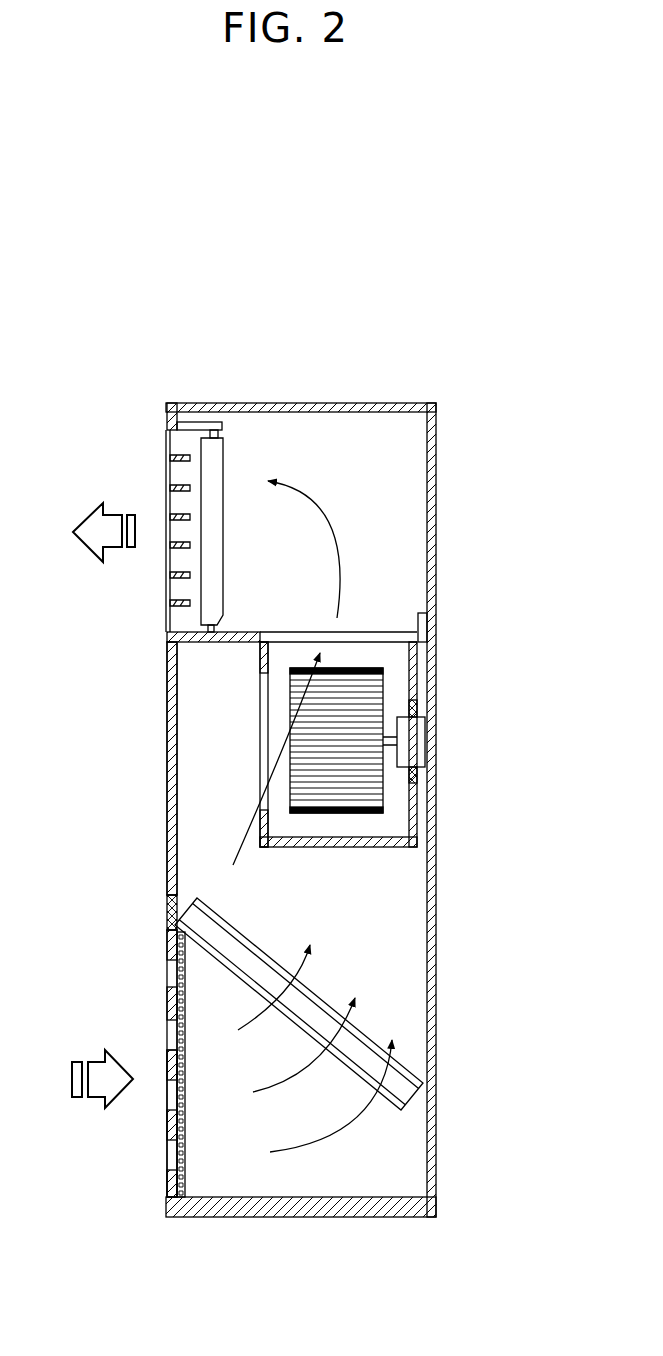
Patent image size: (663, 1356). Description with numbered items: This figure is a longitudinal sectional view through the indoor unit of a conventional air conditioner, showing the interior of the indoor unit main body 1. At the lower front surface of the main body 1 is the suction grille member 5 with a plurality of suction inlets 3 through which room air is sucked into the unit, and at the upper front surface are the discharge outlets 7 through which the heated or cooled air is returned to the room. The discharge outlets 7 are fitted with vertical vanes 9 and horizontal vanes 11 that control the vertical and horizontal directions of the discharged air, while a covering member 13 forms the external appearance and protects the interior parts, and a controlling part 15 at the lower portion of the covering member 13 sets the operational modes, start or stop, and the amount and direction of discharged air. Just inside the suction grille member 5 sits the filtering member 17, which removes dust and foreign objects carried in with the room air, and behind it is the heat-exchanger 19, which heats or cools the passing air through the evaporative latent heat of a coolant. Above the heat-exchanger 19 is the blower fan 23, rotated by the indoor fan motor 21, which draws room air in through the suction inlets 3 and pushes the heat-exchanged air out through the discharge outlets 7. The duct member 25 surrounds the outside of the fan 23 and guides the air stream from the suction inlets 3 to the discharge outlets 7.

The indoor unit main body 1 is at (432, 992).
The suction inlets 3 is at (165, 1160).
The suction grille member 5 is at (165, 1000).
The discharge outlets 7 is at (156, 468).
The vertical vanes 9 is at (168, 580).
The horizontal vanes 11 is at (220, 468).
The covering member 13 is at (167, 741).
The controlling part 15 is at (163, 908).
The filtering member 17 is at (183, 1152).
The heat-exchanger 19 is at (407, 1093).
The indoor fan motor 21 is at (415, 747).
The blower fan 23 is at (383, 690).
The duct member 25 is at (363, 847).